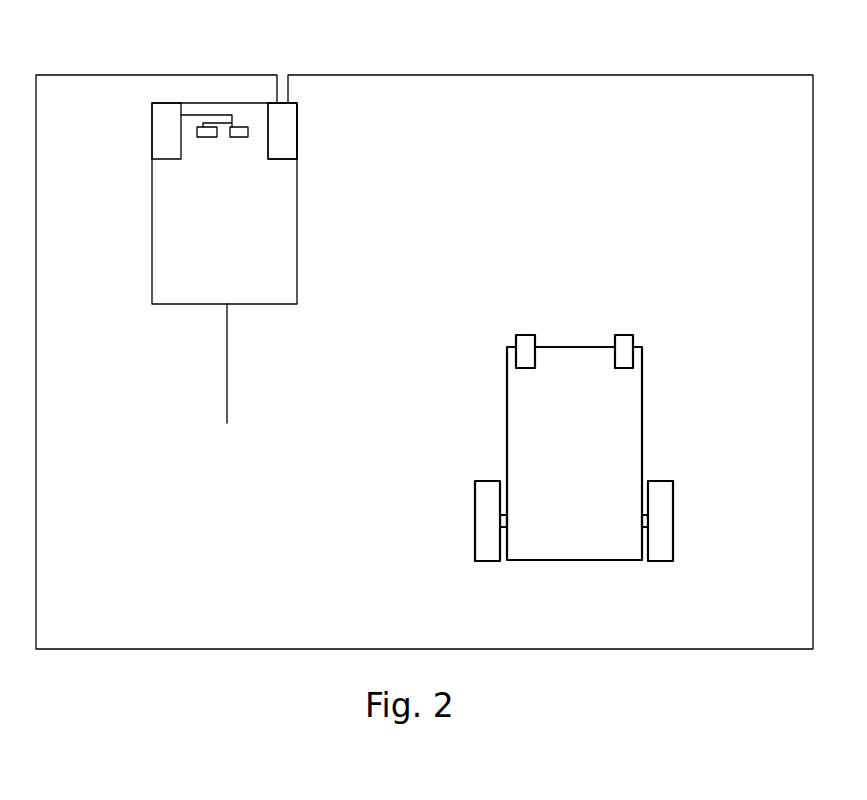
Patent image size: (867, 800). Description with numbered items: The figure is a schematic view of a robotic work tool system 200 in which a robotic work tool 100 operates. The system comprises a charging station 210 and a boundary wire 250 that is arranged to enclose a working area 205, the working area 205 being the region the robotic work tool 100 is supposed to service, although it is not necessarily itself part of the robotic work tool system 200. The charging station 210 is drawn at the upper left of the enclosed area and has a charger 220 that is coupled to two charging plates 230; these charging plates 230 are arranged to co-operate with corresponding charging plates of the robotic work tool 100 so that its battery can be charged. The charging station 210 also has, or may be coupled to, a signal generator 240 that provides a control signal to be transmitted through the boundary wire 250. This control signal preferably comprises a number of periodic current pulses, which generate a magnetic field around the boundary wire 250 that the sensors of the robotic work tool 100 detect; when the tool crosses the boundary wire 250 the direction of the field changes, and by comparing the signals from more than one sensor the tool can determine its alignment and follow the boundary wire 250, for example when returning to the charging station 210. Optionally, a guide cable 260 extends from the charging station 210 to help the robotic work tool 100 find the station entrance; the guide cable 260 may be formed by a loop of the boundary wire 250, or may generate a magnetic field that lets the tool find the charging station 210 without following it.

The robotic work tool 100 is at (643, 472).
The robotic work tool system 200 is at (139, 91).
The working area 205 is at (603, 96).
The charging station 210 is at (152, 167).
The charger 220 is at (163, 112).
The charging plates 230 is at (210, 126).
The signal generator 240 is at (298, 143).
The boundary wire 250 is at (752, 75).
The guide cable 260 is at (227, 400).